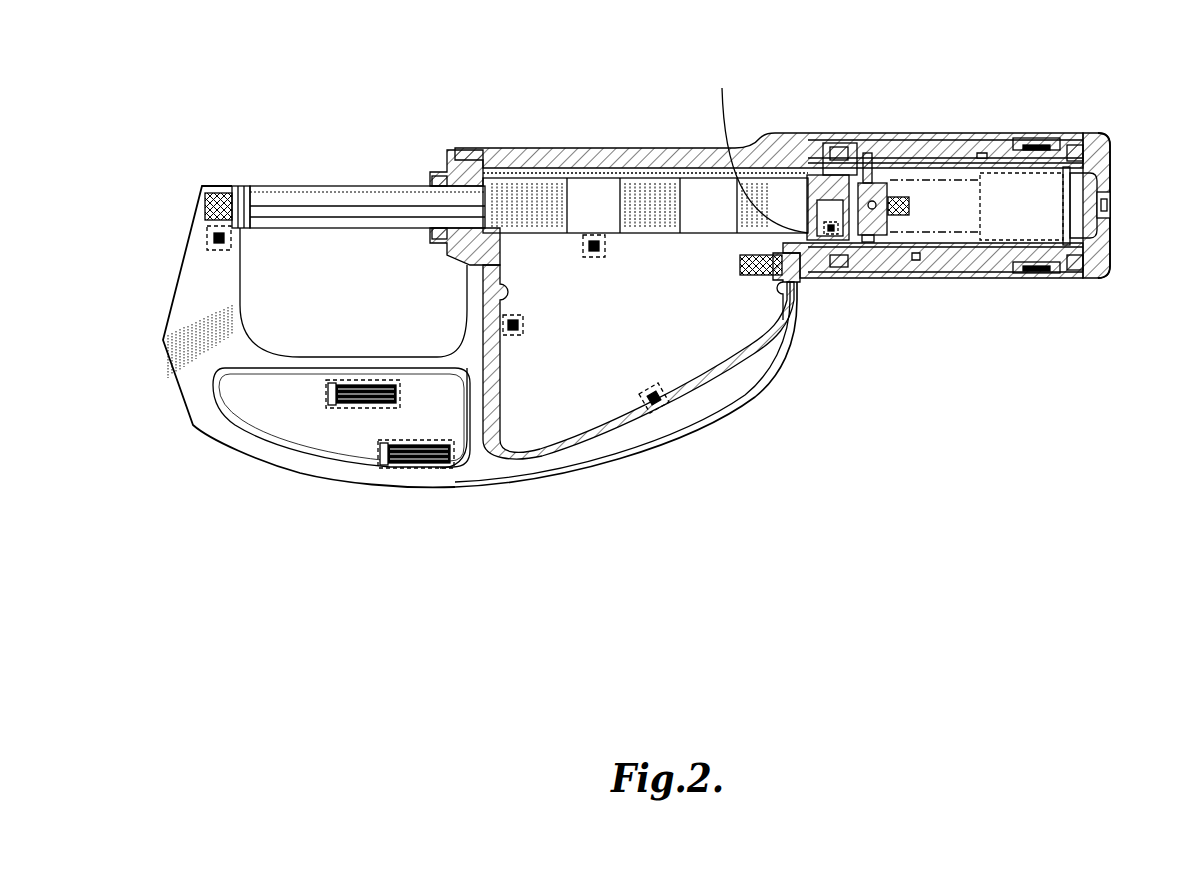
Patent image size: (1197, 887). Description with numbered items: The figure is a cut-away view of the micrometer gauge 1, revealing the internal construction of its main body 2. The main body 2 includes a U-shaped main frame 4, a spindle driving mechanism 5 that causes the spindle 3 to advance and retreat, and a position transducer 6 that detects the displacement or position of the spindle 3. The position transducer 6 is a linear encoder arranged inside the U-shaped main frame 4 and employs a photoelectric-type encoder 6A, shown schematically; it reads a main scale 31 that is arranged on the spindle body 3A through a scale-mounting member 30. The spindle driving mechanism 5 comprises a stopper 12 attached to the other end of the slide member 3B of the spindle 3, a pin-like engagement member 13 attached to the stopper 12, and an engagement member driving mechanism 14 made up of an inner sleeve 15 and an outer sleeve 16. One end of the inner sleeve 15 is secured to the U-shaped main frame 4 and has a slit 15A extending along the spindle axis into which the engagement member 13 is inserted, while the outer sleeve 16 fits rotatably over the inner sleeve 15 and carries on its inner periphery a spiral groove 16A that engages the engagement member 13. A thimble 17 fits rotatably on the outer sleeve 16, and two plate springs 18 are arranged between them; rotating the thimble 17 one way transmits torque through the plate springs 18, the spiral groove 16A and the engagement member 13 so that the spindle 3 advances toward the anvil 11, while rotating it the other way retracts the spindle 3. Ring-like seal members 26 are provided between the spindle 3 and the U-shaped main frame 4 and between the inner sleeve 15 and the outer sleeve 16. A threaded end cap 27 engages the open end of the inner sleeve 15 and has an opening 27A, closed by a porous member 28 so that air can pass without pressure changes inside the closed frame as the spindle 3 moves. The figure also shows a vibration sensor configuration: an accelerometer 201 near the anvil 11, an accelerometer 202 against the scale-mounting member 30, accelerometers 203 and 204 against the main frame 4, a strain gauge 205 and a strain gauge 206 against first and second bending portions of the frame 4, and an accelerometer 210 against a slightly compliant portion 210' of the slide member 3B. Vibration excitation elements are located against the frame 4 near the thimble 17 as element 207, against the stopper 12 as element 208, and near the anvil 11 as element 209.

The micrometer gauge 1 is at (780, 106).
The main body 2 is at (463, 494).
The spindle 3 is at (342, 233).
The spindle body 3A is at (313, 188).
The slide member 3B is at (804, 192).
The U-shaped main frame 4 is at (345, 477).
The spindle driving mechanism 5 is at (935, 74).
The position transducer 6 is at (597, 316).
The photoelectric-type encoder 6A is at (642, 280).
The anvil 11 is at (242, 186).
The stopper 12 is at (877, 200).
The engagement member 13 is at (866, 180).
The engagement member driving mechanism 14 is at (924, 131).
The inner sleeve 15 is at (953, 280).
The slit 15A is at (1040, 173).
The outer sleeve 16 is at (873, 281).
The spiral groove 16A is at (912, 281).
The thimble 17 is at (852, 280).
The plate springs 18 is at (1028, 138).
The seal members 26 is at (428, 181).
The end cap 27 is at (1114, 230).
The opening 27A is at (1112, 194).
The porous member 28 is at (1111, 204).
The scale-mounting member 30 is at (520, 178).
The main scale 31 is at (515, 148).
The accelerometer 201 is at (207, 240).
The accelerometer 202 is at (588, 234).
The accelerometer 203 is at (512, 338).
The accelerometer 204 is at (665, 392).
The strain gauge 205 is at (325, 391).
The strain gauge 206 is at (417, 470).
The vibration excitation element 207 is at (753, 277).
The vibration excitation element 208 is at (907, 207).
The vibration excitation element 209 is at (213, 192).
The accelerometer 210 is at (763, 117).
The slightly compliant portion 210' is at (746, 149).